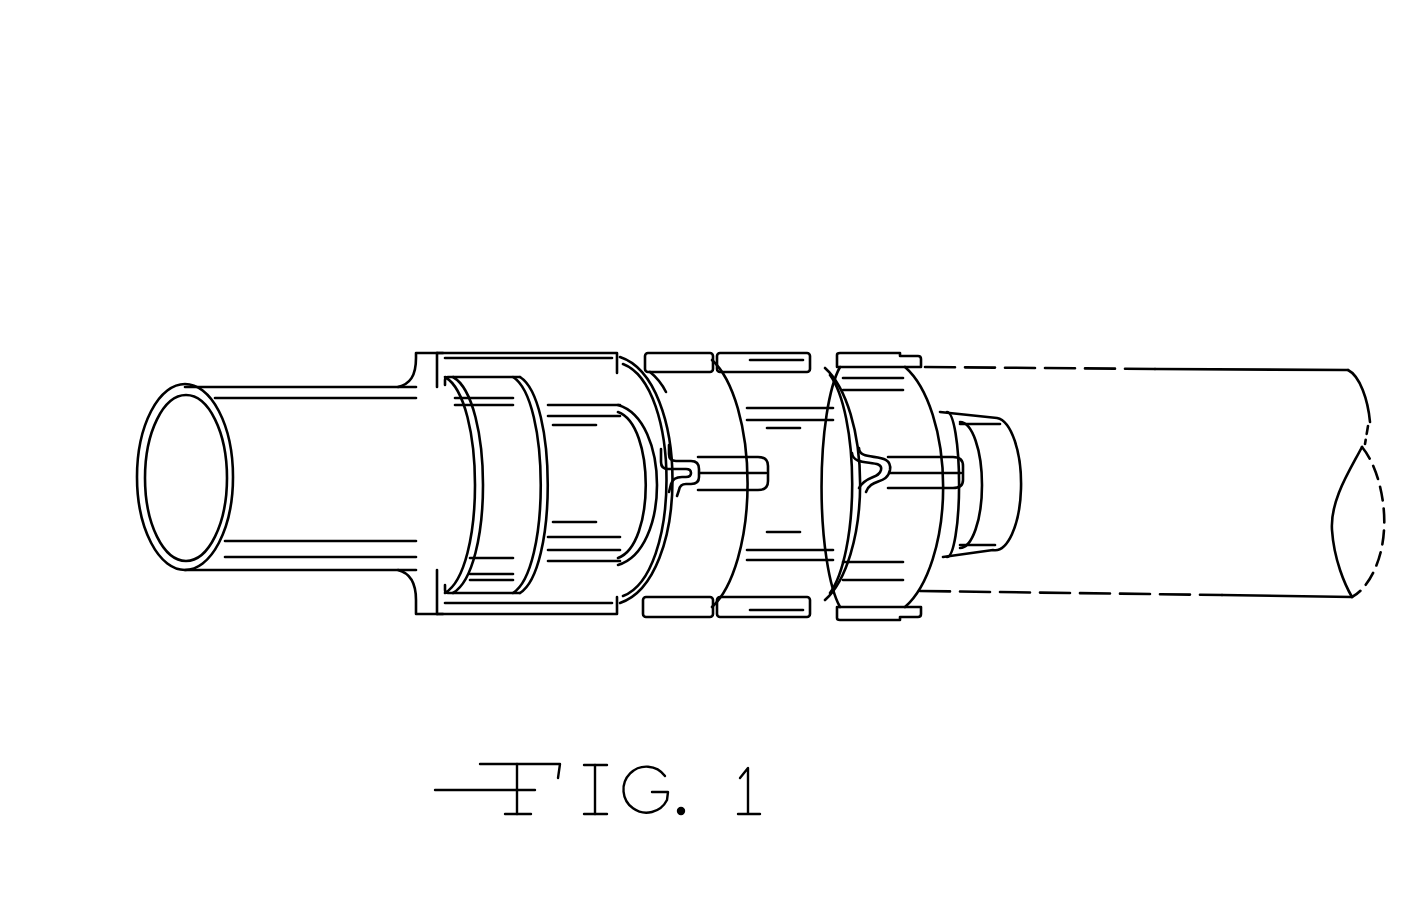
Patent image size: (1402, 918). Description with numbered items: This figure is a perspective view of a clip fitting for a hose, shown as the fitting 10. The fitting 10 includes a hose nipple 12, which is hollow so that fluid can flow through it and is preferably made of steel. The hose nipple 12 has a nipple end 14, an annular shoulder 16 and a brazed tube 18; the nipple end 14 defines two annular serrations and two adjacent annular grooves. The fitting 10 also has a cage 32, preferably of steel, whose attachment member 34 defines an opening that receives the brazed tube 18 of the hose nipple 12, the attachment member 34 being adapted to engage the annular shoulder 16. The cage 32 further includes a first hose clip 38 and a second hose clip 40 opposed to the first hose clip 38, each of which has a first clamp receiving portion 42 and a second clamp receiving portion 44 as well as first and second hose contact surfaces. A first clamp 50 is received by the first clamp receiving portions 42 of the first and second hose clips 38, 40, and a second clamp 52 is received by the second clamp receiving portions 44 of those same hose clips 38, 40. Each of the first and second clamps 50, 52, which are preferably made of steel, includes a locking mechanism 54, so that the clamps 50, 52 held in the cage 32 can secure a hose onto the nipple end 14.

The fitting 10 is at (813, 172).
The hose nipple 12 is at (536, 365).
The nipple end 14 is at (995, 420).
The annular shoulder 16 is at (482, 392).
The brazed tube 18 is at (240, 387).
The cage 32 is at (416, 355).
The attachment member 34 is at (405, 588).
The first hose clip 38 is at (533, 395).
The second hose clip 40 is at (512, 617).
The first clamp receiving portion 42 is at (868, 353).
The second clamp receiving portion 44 is at (707, 400).
The first clamp 50 is at (903, 392).
The second clamp 52 is at (708, 380).
The locking mechanism 54 is at (777, 477).